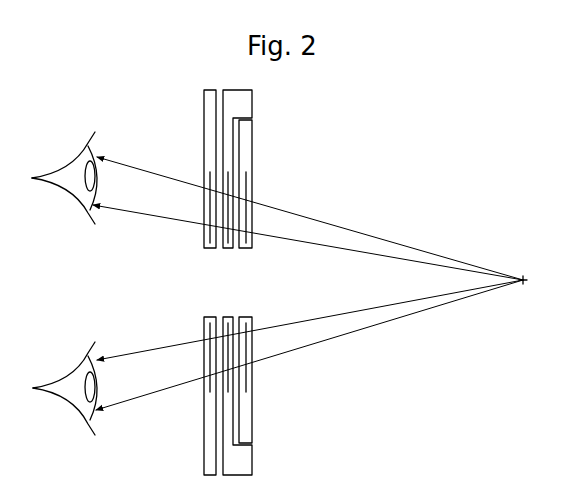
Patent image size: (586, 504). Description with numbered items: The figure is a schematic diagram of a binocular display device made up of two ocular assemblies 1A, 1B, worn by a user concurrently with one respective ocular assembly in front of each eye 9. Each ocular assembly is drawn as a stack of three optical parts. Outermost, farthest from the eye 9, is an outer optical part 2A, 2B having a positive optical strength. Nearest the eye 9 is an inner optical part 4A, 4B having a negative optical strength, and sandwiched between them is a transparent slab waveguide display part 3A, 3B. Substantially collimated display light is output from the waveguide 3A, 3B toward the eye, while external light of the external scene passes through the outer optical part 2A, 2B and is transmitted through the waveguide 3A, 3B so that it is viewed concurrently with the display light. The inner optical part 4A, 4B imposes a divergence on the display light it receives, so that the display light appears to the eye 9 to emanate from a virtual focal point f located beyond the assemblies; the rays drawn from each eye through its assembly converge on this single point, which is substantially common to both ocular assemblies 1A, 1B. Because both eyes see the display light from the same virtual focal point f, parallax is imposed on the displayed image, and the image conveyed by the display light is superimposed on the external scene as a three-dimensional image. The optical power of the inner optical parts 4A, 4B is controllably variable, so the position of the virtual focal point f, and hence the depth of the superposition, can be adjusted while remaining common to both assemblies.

The ocular assembly 1A is at (257, 162).
The outer optical part 2A is at (248, 152).
The transparent slab waveguide display part 3A is at (247, 103).
The inner optical part 4A is at (207, 115).
The ocular assembly 1B is at (257, 396).
The outer optical part 2B is at (248, 412).
The transparent slab waveguide display part 3B is at (243, 460).
The inner optical part 4B is at (207, 464).
The eye 9 is at (128, 225).
The virtual focal point f is at (526, 275).